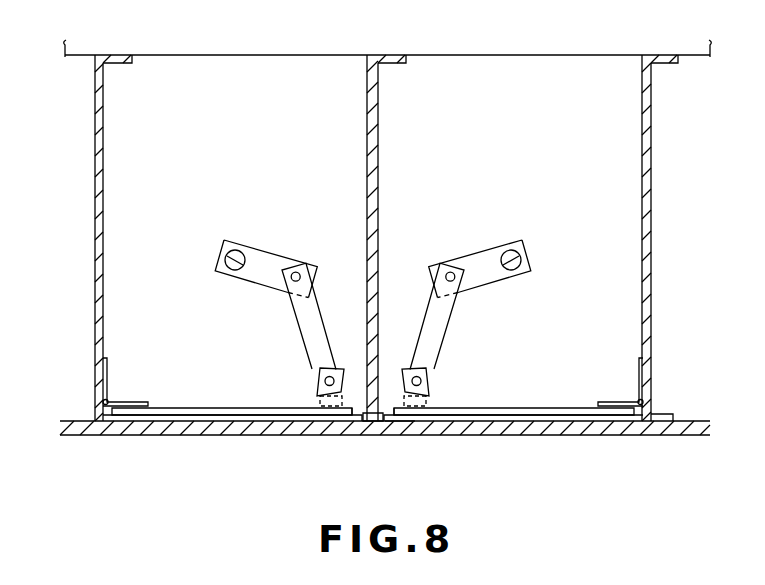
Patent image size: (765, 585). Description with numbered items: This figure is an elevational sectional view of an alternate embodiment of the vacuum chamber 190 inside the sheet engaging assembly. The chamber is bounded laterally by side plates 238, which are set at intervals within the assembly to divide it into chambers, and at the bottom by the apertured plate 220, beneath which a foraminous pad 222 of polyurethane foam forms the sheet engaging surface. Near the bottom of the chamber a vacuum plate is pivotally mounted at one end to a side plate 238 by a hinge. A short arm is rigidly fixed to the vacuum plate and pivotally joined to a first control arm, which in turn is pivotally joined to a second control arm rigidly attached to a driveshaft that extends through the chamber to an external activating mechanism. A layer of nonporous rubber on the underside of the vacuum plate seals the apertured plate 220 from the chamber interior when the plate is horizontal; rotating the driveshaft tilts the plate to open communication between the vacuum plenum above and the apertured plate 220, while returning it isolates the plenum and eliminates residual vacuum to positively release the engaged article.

The vacuum chamber 190 is at (228, 80).
The apertured plate 220 is at (175, 427).
The foraminous pad 222 is at (400, 430).
The side plate 238 is at (95, 137).